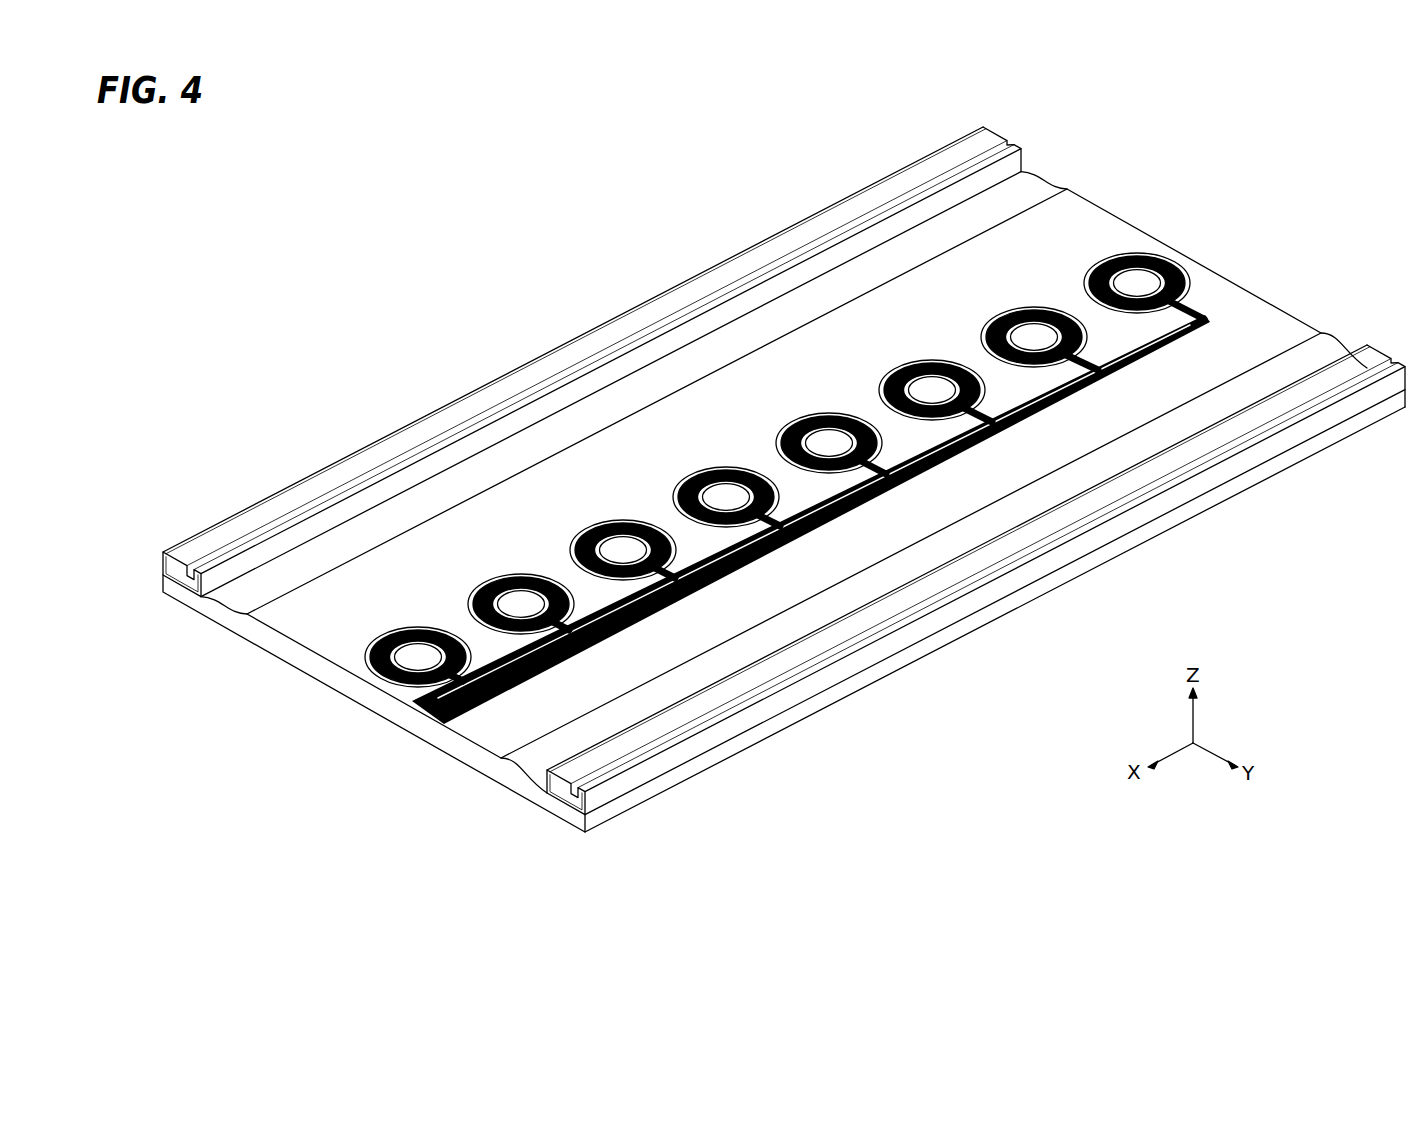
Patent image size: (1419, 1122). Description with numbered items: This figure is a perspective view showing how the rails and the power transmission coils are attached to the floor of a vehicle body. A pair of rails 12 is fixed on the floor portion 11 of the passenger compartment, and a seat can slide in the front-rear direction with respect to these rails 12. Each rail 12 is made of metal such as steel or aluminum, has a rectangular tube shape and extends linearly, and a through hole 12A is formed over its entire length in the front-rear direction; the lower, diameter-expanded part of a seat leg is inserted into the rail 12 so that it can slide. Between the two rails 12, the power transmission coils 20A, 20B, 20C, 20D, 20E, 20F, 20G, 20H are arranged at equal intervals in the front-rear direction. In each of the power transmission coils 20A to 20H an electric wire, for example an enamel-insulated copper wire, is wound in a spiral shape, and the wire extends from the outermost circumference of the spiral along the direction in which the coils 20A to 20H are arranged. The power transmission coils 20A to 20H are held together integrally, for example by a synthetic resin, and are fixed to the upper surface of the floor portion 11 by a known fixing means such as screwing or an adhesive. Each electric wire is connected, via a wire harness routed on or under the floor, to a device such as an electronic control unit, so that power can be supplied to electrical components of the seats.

The floor portion 11 is at (389, 699).
The rail 12 is at (163, 577).
The through hole 12A is at (193, 587).
The power transmission coil 20A is at (401, 628).
The power transmission coil 20B is at (517, 575).
The power transmission coil 20C is at (614, 521).
The power transmission coil 20D is at (703, 468).
The power transmission coil 20E is at (810, 414).
The power transmission coil 20F is at (914, 361).
The power transmission coil 20G is at (1021, 308).
The power transmission coil 20H is at (1132, 254).